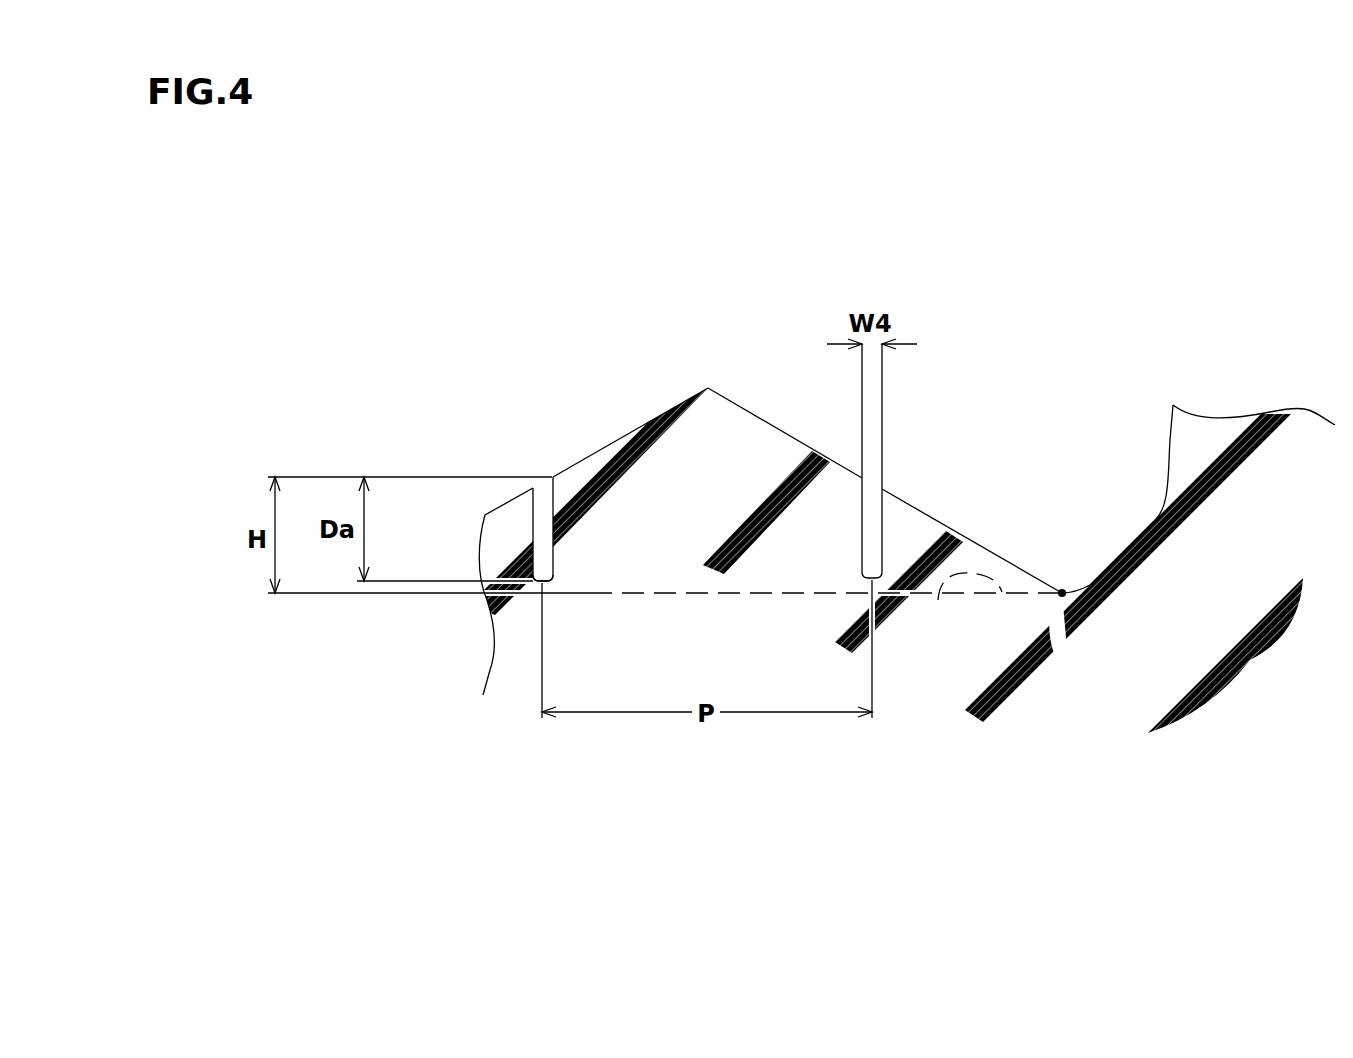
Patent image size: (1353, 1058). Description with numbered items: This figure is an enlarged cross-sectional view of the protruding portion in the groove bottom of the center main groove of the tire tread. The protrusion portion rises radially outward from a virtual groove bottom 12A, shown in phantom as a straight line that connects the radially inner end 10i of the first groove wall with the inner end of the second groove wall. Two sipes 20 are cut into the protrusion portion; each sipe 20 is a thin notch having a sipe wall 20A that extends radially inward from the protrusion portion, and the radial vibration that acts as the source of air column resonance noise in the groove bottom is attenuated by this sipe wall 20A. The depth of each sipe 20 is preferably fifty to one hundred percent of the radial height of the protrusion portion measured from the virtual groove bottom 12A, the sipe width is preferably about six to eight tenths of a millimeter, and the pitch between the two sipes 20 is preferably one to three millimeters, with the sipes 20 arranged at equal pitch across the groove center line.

The sipe 20 is at (545, 510).
The sipe wall 20A is at (552, 560).
The virtual groove bottom 12A is at (938, 600).
The radially inner end of the first groove wall 10i is at (1062, 593).